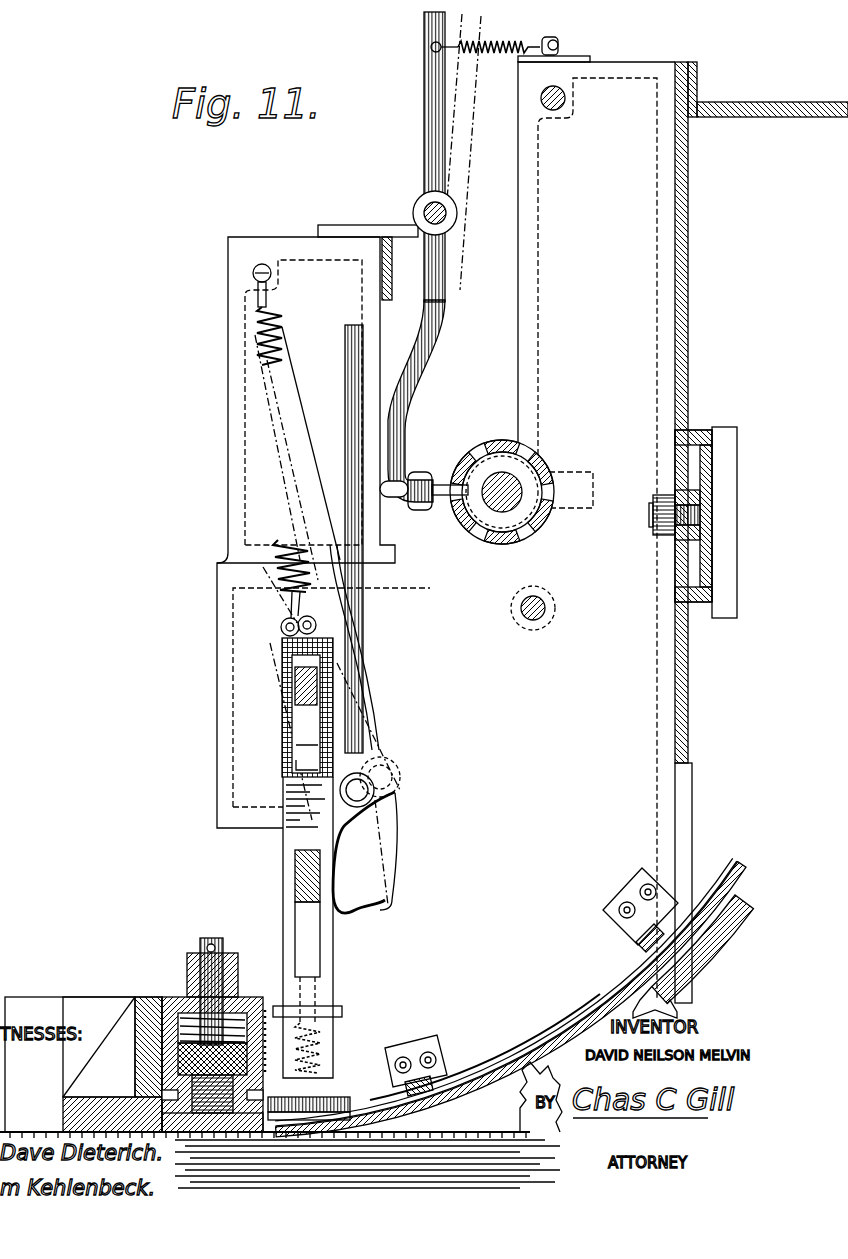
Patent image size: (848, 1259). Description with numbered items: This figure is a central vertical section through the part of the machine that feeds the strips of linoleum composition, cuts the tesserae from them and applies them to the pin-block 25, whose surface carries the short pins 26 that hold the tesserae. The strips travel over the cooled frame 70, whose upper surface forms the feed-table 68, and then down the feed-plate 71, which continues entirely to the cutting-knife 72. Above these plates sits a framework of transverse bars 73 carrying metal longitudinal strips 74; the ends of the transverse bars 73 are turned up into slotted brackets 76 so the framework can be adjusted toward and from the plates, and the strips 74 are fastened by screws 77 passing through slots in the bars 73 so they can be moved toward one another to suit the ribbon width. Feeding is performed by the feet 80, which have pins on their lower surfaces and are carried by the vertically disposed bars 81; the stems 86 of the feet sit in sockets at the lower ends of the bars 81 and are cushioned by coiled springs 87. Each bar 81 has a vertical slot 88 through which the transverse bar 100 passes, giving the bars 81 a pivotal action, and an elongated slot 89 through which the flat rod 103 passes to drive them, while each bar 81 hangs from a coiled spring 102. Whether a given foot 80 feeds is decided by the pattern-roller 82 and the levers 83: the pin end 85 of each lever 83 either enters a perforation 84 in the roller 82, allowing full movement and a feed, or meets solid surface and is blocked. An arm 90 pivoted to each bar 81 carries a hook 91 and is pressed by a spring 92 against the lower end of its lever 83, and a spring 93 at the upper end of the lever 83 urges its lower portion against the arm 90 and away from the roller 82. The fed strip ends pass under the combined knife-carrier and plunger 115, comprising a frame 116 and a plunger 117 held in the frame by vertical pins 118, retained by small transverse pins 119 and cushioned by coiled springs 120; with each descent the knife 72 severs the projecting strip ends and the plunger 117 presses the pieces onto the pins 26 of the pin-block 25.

The pin-block 25 is at (367, 1164).
The pins 26 is at (520, 1097).
The feed-table 68 is at (710, 876).
The frame 70 is at (693, 956).
The feed-plate 71 is at (511, 999).
The cutting-knife 72 is at (306, 1096).
The transverse bars 73 is at (632, 940).
The longitudinal strips 74 is at (510, 1058).
The brackets 76 is at (626, 886).
The screws 77 is at (640, 921).
The feet 80 is at (326, 1102).
The bars 81 is at (288, 842).
The pattern-roller 82 is at (510, 492).
The levers 83 is at (424, 93).
The perforations 84 is at (540, 446).
The pin ends 85 is at (445, 484).
The stems 86 is at (327, 1074).
The coiled springs 87 is at (322, 1034).
The vertical slot 88 is at (303, 748).
The elongated slot 89 is at (305, 940).
The arm 90 is at (364, 650).
The hook 91 is at (335, 903).
The spring 92 is at (370, 616).
The spring 93 is at (505, 54).
The bar 100 is at (282, 690).
The coiled spring 102 is at (258, 330).
The flat rod 103 is at (295, 880).
The combined knife-carrier and plunger 115 is at (178, 996).
The frame 116 is at (140, 988).
The plunger 117 is at (220, 1128).
The vertical pins 118 is at (200, 963).
The transverse pins 119 is at (208, 945).
The coiled springs 120 is at (249, 998).